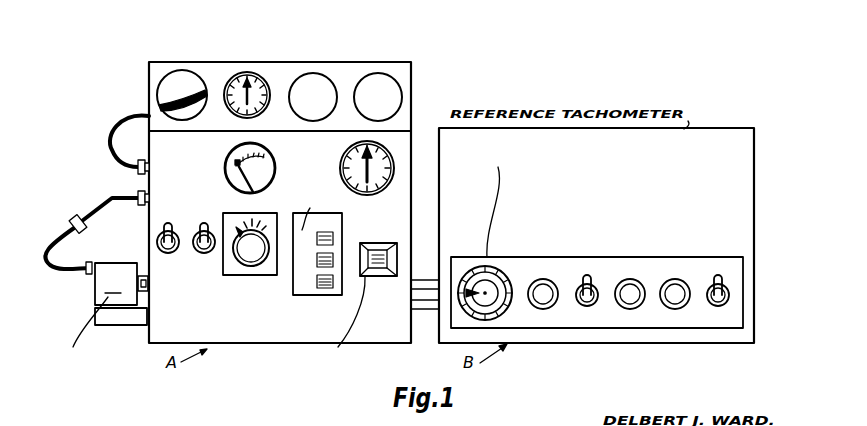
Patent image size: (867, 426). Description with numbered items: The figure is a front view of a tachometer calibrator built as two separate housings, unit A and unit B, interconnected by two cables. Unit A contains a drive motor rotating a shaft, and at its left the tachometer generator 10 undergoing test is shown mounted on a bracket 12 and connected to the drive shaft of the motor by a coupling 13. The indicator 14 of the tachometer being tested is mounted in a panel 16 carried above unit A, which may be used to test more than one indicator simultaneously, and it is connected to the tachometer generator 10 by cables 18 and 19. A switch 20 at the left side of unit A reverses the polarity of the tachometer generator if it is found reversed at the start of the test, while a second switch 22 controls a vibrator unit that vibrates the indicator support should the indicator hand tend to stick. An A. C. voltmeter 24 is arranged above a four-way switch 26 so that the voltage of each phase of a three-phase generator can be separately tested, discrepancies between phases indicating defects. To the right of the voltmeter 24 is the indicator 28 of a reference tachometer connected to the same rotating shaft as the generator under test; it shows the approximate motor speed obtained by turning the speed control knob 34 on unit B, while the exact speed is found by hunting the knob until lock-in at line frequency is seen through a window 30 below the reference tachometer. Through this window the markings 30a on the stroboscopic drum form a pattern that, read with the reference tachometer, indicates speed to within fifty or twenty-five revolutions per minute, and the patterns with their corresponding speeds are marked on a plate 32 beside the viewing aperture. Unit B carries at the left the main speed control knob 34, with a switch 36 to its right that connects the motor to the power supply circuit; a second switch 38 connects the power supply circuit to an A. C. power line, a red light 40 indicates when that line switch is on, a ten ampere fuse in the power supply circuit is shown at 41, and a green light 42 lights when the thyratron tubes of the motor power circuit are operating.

The tachometer generator 10 is at (97, 327).
The bracket 12 is at (140, 325).
The coupling 13 is at (141, 274).
The indicator 14 is at (243, 72).
The panel 16 is at (298, 62).
The cable 18 is at (112, 198).
The cable 19 is at (118, 114).
The switch 20 is at (164, 232).
The second switch 22 is at (218, 216).
The A. C. voltmeter 24 is at (276, 152).
The four-way switch 26 is at (232, 276).
The indicator 28 is at (392, 157).
The window 30 is at (336, 294).
The markings 30a is at (370, 277).
The plate 32 is at (300, 295).
The speed control knob 34 is at (473, 263).
The switch 36 is at (587, 272).
The second switch 38 is at (717, 272).
The red light 40 is at (630, 278).
The 10 ampere fuse 41 is at (675, 278).
The green light 42 is at (537, 278).